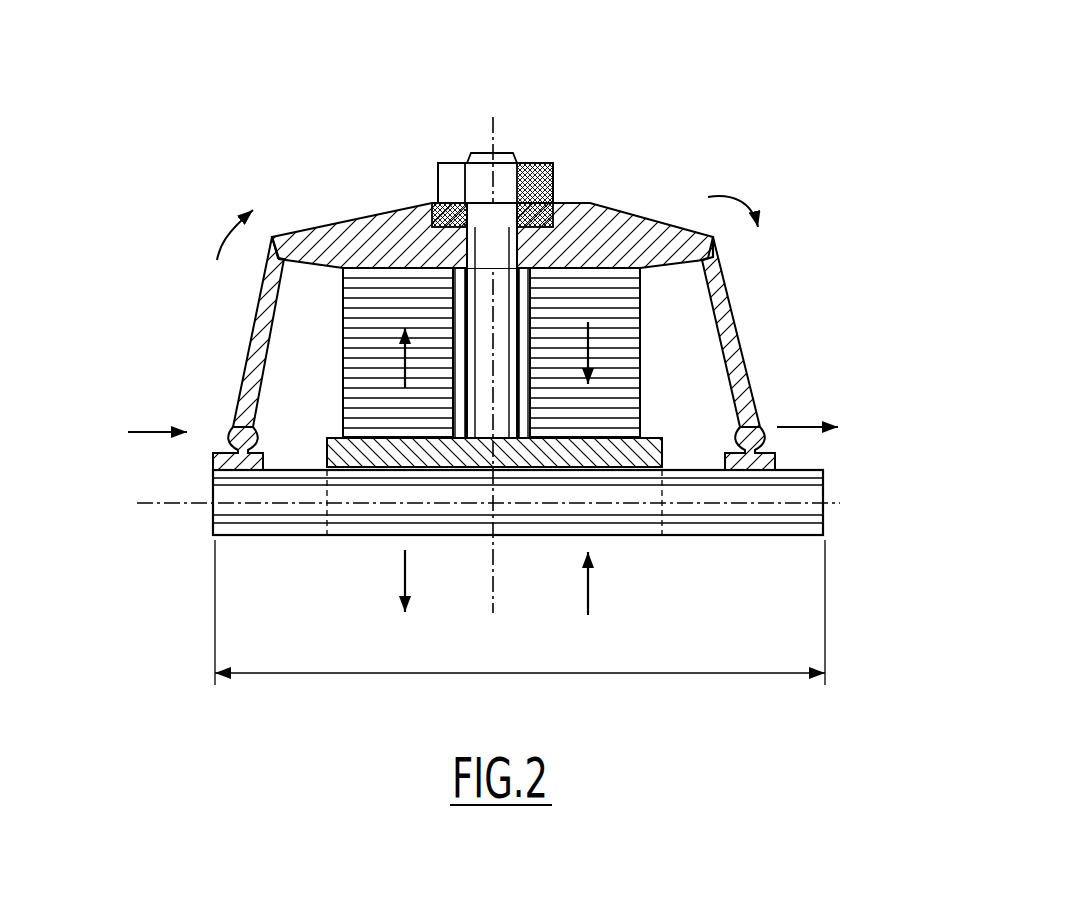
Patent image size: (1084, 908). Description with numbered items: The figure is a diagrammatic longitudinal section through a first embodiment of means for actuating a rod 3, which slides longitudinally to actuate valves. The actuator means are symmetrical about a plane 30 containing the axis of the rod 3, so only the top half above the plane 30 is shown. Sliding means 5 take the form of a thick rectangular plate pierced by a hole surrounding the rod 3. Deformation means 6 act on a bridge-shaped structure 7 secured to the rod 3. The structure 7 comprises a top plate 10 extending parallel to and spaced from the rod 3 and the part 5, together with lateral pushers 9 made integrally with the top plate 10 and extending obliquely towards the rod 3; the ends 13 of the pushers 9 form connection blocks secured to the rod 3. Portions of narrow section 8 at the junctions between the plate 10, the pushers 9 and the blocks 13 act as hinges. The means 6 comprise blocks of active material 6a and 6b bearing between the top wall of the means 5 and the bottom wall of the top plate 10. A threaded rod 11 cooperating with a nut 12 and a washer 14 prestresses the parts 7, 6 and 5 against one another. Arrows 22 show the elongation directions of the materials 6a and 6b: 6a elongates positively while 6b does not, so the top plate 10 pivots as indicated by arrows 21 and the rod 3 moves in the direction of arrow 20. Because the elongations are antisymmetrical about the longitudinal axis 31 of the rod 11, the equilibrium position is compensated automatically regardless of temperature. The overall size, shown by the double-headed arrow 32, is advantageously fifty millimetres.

The rod 3 is at (792, 507).
The sliding means 5 is at (383, 455).
The deformation means 6 is at (483, 352).
The first active material block 6a is at (350, 357).
The second active material block 6b is at (625, 362).
The structure 7 is at (484, 193).
The portions of narrow section 8 is at (504, 350).
The lateral pushers 9 is at (245, 393).
The top plate 10 is at (402, 232).
The threaded rod 11 is at (522, 310).
The nut 12 is at (541, 161).
The ends of the pushers 13 is at (213, 463).
The washer 14 is at (566, 203).
The arrow 20 is at (150, 430).
The arrows 21 is at (223, 232).
The arrows 22 is at (393, 367).
The plane 30 is at (187, 505).
The longitudinal axis 31 is at (493, 118).
The double-headed arrow 32 is at (538, 673).